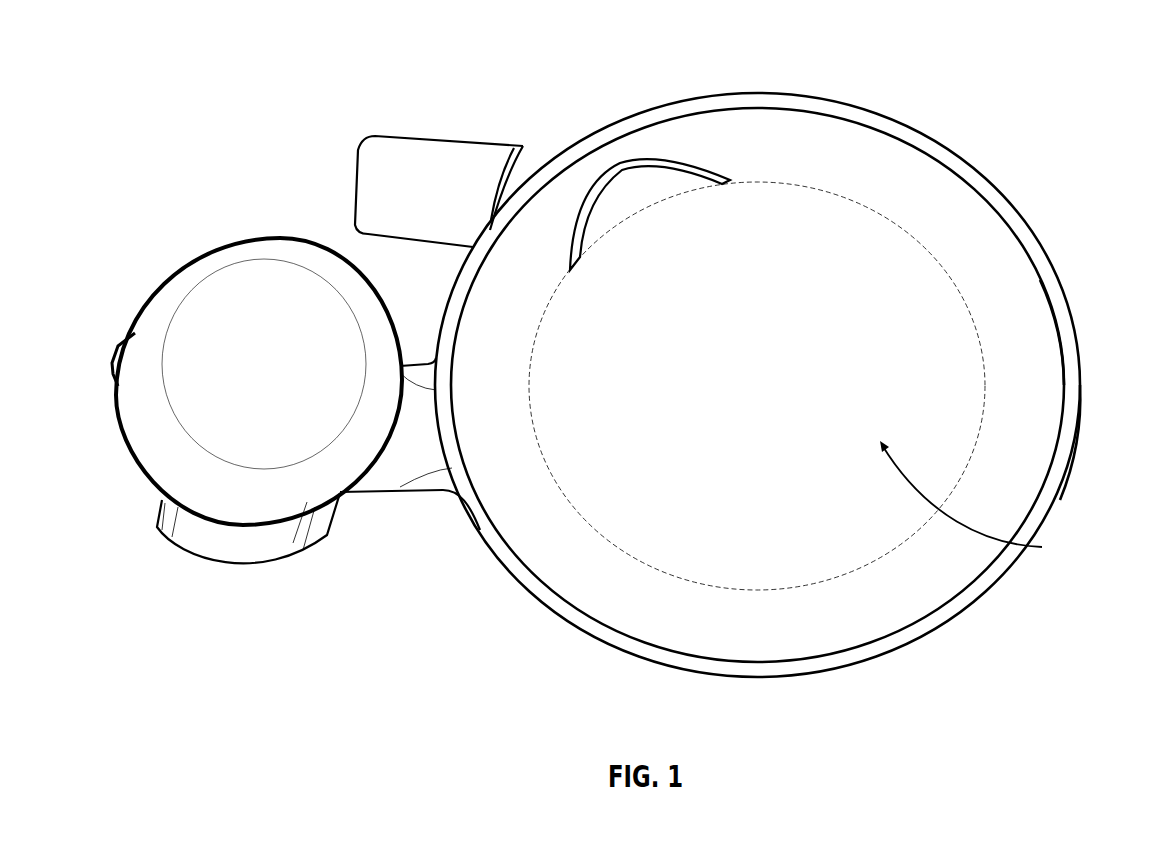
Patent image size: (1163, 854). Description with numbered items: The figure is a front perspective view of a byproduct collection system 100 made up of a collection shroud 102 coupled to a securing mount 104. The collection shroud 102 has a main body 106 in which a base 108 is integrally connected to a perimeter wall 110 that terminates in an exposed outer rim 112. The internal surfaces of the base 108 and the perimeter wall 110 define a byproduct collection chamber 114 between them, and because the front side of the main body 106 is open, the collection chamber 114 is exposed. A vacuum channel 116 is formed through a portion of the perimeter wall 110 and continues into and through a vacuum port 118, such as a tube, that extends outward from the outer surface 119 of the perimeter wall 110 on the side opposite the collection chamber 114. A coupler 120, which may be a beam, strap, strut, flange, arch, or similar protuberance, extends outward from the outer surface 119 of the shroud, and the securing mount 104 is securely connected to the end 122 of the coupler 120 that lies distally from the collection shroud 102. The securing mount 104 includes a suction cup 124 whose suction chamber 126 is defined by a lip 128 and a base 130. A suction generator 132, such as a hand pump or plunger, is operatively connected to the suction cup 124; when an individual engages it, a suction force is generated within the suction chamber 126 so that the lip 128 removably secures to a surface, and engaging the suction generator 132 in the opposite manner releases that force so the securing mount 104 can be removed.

The byproduct collection system 100 is at (925, 38).
The collection shroud 102 is at (985, 182).
The securing mount 104 is at (139, 509).
The main body 106 is at (1038, 318).
The base 108 is at (773, 283).
The perimeter wall 110 is at (897, 180).
The outer rim 112 is at (1070, 375).
The byproduct collection chamber 114 is at (980, 500).
The vacuum channel 116 is at (600, 208).
The vacuum port 118 is at (475, 158).
The outer surface 119 is at (457, 283).
The coupler 120 is at (390, 470).
The end 122 is at (367, 493).
The suction cup 124 is at (255, 263).
The suction chamber 126 is at (275, 333).
The lip 128 is at (188, 272).
The base 130 is at (317, 341).
The suction generator 132 is at (240, 568).